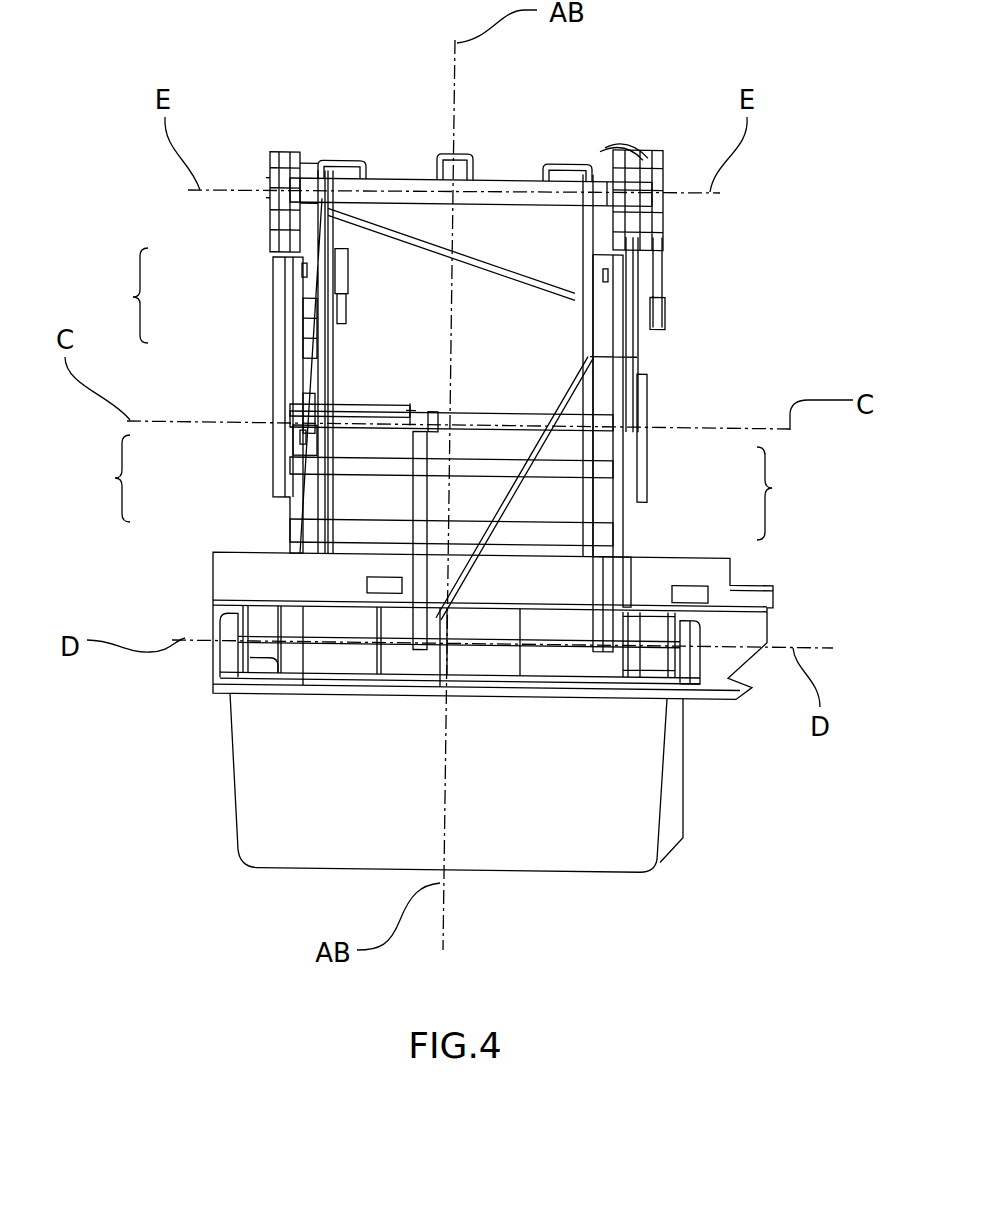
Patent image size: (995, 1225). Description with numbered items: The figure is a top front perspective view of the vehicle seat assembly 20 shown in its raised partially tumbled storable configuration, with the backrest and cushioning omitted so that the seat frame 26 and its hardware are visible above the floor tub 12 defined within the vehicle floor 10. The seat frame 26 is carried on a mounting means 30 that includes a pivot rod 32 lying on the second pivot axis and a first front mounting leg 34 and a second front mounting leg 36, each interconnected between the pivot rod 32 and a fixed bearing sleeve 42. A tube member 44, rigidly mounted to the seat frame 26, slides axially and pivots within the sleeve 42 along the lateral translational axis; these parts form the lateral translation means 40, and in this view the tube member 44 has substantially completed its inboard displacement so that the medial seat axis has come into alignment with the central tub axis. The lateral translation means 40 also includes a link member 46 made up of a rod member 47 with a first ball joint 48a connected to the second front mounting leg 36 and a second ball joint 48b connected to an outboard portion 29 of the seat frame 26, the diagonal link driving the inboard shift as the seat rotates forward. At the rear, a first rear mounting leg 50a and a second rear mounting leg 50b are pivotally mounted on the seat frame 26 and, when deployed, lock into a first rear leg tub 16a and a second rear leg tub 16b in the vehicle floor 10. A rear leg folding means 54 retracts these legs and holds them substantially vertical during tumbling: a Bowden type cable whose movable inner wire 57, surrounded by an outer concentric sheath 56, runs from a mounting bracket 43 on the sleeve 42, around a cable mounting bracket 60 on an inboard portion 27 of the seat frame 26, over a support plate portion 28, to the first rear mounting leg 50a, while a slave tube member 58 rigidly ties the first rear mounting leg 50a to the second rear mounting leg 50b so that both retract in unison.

The vehicle floor 10 is at (232, 575).
The floor tub 12 is at (295, 680).
The first rear leg tub 16a is at (698, 587).
The second rear leg tub 16b is at (370, 598).
The vehicle seat assembly 20 is at (712, 418).
The seat frame 26 is at (303, 428).
The inboard portion 27 is at (288, 404).
The support plate portion 28 is at (285, 262).
The outboard portion 29 is at (633, 353).
The mounting means 30 is at (785, 493).
The pivot rod 32 is at (600, 583).
The first front mounting leg 34 is at (642, 643).
The second front mounting leg 36 is at (423, 483).
The lateral translation means 40 is at (102, 478).
The fixed bearing sleeve 42 is at (393, 428).
The mounting bracket 43 is at (432, 412).
The tube member 44 is at (300, 440).
The link member 46 is at (453, 570).
The rod member 47 is at (640, 408).
The first ball joint 48a is at (437, 612).
The second ball joint 48b is at (590, 352).
The first rear mounting leg 50a is at (568, 220).
The second rear mounting leg 50b is at (373, 218).
The rear leg folding means 54 is at (119, 295).
The outer concentric sheath 56 is at (305, 297).
The movable inner wire 57 is at (400, 405).
The slave tube member 58 is at (313, 322).
The cable mounting bracket 60 is at (287, 398).